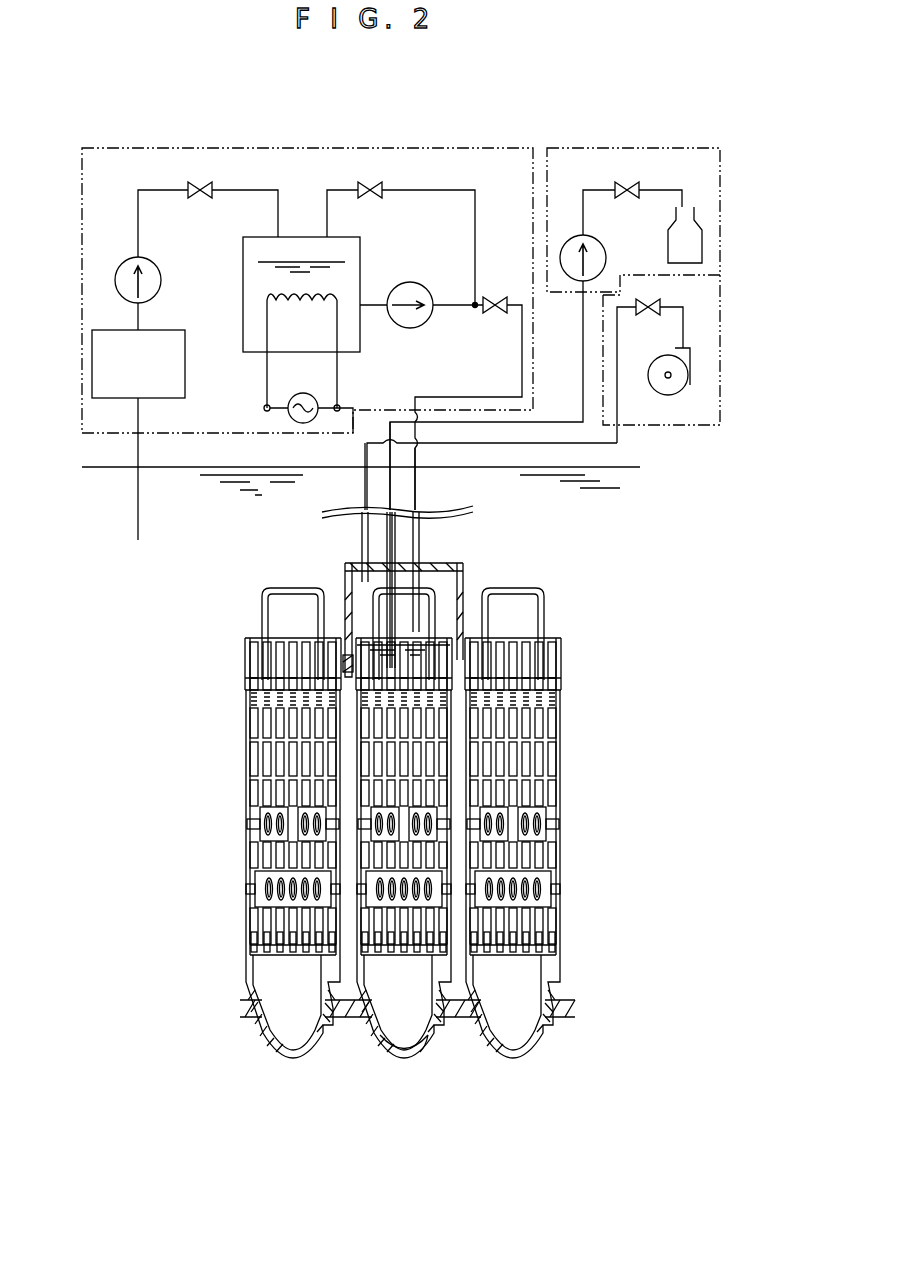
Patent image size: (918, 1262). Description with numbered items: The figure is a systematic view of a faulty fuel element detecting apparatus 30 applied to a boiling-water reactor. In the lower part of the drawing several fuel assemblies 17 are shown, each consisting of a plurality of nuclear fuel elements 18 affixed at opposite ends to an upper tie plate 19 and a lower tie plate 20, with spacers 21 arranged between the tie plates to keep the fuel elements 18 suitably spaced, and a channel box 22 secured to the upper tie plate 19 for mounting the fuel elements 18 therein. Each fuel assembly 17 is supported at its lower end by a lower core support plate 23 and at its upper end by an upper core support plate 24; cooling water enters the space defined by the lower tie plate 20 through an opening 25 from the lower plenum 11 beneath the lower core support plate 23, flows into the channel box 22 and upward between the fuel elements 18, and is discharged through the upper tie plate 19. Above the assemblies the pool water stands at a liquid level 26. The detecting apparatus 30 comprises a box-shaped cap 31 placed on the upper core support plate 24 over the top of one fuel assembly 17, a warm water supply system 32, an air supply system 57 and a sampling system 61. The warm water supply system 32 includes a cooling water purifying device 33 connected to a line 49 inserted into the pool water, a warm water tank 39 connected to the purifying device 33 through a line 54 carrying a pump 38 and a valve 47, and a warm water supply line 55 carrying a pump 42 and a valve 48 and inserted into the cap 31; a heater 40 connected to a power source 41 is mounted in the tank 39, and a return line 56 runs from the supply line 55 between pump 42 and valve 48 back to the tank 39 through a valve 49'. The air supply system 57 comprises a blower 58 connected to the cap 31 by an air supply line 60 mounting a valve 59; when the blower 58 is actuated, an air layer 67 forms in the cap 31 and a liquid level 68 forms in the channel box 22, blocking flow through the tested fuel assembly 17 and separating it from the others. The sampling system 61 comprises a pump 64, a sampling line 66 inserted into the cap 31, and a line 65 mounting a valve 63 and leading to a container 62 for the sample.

The lower plenum 11 is at (352, 1092).
The fuel assembly 17 is at (262, 824).
The nuclear fuel element 18 is at (264, 822).
The upper tie plate 19 is at (293, 634).
The lower tie plate 20 is at (270, 1003).
The spacer 21 is at (266, 824).
The channel box 22 is at (266, 880).
The lower core support plate 23 is at (455, 1012).
The upper core support plate 24 is at (568, 660).
The opening 25 is at (400, 1048).
The liquid level 26 is at (258, 467).
The faulty fuel element detecting apparatus 30 is at (780, 260).
The box-shaped cap 31 is at (392, 615).
The warm water supply system 32 is at (82, 378).
The cooling water purifying device 33 is at (178, 330).
The pump 38 is at (160, 275).
The warm water tank 39 is at (360, 264).
The heater 40 is at (265, 400).
The power source 41 is at (318, 400).
The pump 42 is at (410, 328).
The valve 47 is at (195, 185).
The valve 48 is at (500, 298).
The line 49 is at (106, 469).
The valve 49' is at (361, 156).
The line 54 is at (138, 190).
The warm water supply line 55 is at (522, 397).
The return line 56 is at (475, 190).
The air supply system 57 is at (665, 425).
The blower 58 is at (690, 385).
The valve 59 is at (670, 300).
The air supply line 60 is at (365, 502).
The sampling system 61 is at (648, 148).
The container 62 is at (700, 226).
The valve 63 is at (620, 183).
The pump 64 is at (606, 258).
The line 65 is at (664, 190).
The sampling line 66 is at (387, 545).
The air layer 67 is at (345, 588).
The liquid level 68 is at (420, 640).